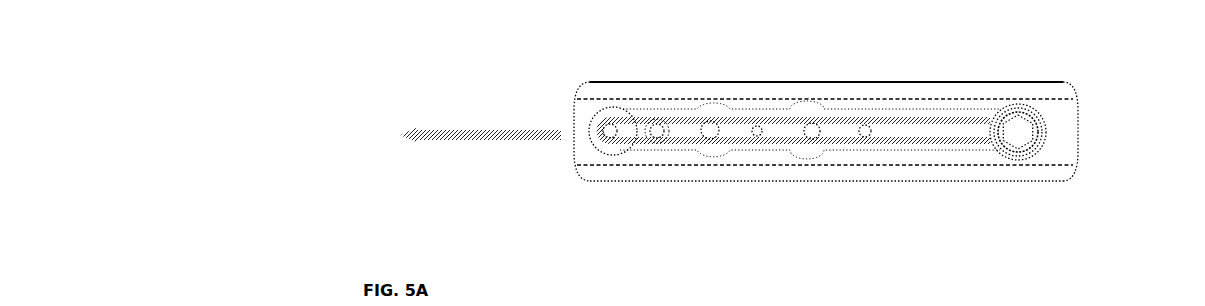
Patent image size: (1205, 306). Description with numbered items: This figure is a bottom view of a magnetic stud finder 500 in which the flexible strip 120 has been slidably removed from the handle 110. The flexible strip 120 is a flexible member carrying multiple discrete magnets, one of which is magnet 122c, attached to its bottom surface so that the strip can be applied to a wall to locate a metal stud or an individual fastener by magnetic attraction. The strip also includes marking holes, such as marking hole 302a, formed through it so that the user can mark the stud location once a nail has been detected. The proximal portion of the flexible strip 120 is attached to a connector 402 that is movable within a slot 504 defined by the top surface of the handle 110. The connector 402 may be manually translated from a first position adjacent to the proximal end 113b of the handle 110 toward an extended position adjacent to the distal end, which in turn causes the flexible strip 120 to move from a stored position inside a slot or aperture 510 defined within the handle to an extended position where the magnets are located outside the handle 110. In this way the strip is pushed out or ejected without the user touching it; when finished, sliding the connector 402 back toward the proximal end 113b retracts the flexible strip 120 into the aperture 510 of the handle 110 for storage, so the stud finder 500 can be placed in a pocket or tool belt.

The magnetic stud finder 500 is at (958, 55).
The handle 110 is at (825, 82).
The slot or aperture 510 is at (580, 166).
The proximal end 113b is at (1060, 144).
The magnet 122c is at (603, 119).
The flexible strip 120 is at (645, 108).
The slot 504 is at (960, 131).
The marking hole 302a is at (660, 137).
The connector 402 is at (1040, 111).